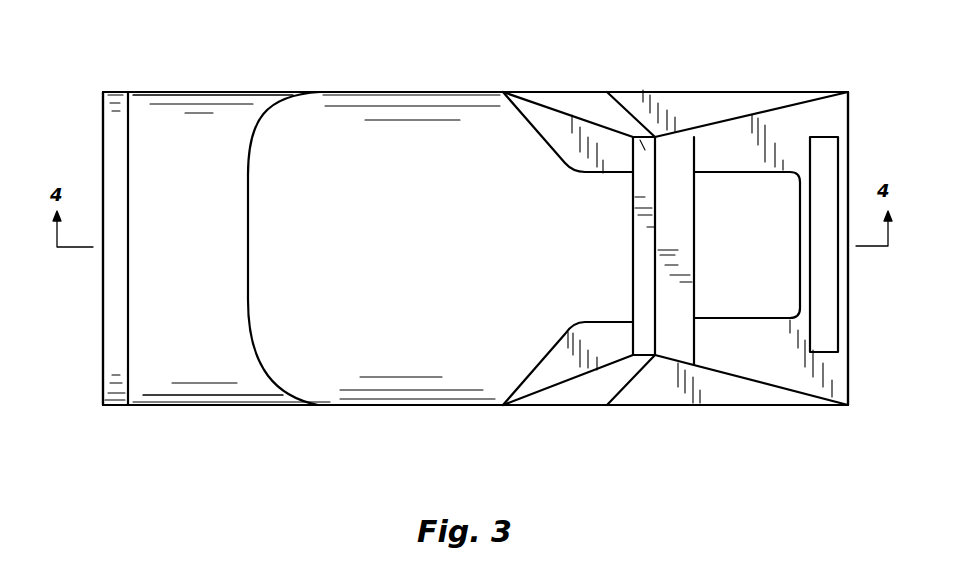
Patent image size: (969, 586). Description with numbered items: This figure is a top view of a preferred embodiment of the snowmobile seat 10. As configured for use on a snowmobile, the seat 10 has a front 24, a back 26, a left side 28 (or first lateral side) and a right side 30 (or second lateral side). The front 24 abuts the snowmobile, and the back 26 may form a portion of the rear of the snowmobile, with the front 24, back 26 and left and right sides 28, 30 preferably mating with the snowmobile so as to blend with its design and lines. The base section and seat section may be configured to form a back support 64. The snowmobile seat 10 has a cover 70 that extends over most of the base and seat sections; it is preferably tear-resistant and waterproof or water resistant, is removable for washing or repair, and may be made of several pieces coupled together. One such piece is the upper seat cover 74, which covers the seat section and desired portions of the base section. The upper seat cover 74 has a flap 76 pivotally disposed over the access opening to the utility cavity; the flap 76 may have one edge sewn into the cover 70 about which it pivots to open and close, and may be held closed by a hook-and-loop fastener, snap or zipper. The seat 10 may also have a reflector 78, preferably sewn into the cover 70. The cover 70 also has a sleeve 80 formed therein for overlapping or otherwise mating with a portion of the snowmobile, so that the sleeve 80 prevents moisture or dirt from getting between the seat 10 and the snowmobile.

The snowmobile seat 10 is at (395, 444).
The front 24 is at (103, 407).
The back 26 is at (850, 143).
The left side 28 is at (170, 407).
The right side 30 is at (208, 90).
The back support 64 is at (643, 145).
The cover 70 is at (99, 346).
The upper seat cover 74 is at (262, 385).
The flap 76 is at (730, 183).
The reflector 78 is at (828, 295).
The sleeve 80 is at (103, 122).